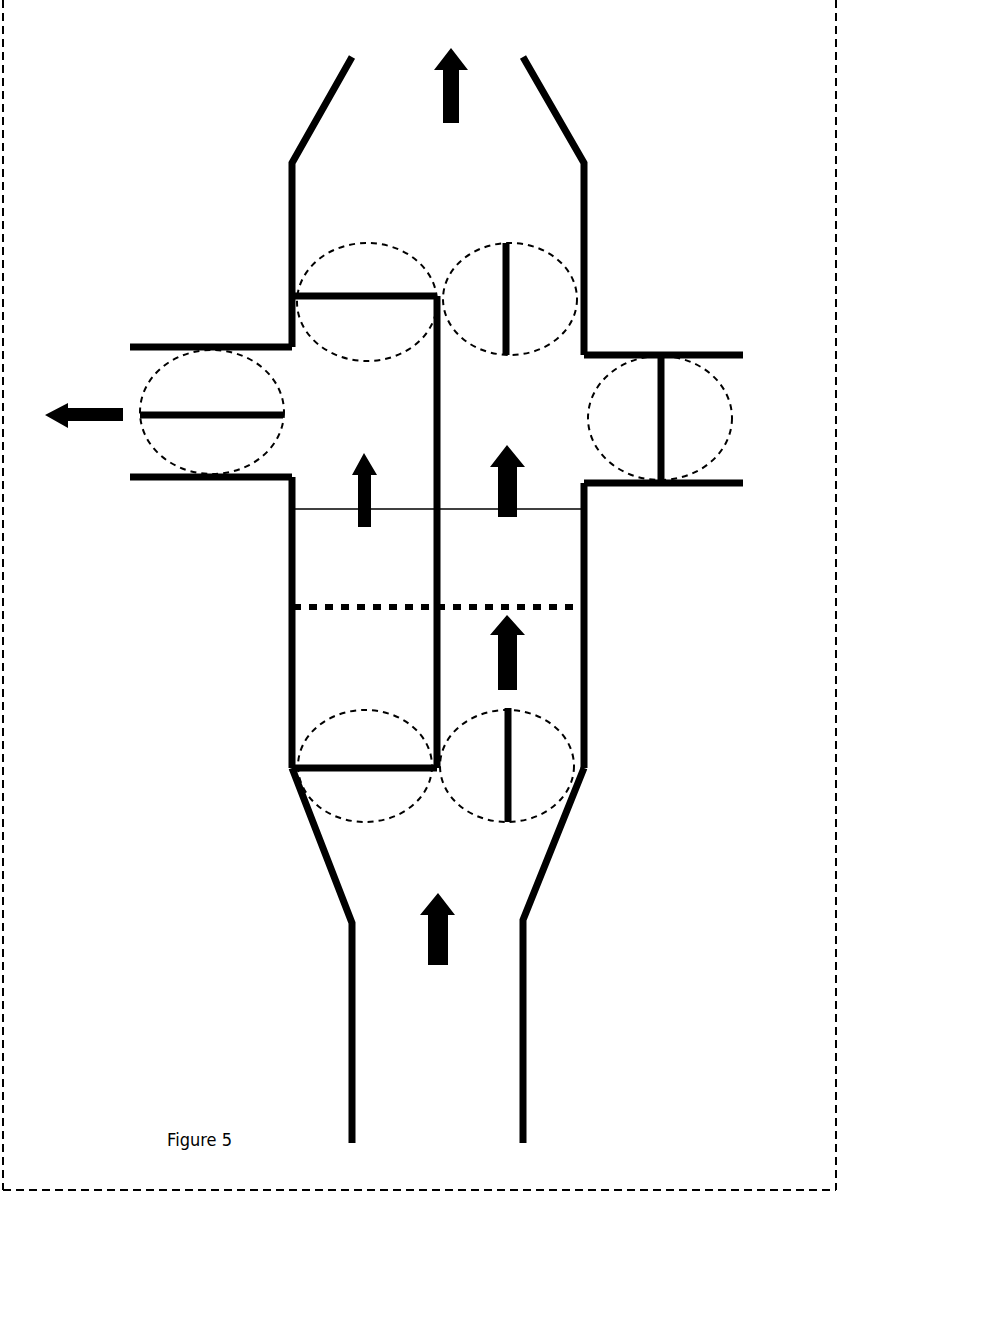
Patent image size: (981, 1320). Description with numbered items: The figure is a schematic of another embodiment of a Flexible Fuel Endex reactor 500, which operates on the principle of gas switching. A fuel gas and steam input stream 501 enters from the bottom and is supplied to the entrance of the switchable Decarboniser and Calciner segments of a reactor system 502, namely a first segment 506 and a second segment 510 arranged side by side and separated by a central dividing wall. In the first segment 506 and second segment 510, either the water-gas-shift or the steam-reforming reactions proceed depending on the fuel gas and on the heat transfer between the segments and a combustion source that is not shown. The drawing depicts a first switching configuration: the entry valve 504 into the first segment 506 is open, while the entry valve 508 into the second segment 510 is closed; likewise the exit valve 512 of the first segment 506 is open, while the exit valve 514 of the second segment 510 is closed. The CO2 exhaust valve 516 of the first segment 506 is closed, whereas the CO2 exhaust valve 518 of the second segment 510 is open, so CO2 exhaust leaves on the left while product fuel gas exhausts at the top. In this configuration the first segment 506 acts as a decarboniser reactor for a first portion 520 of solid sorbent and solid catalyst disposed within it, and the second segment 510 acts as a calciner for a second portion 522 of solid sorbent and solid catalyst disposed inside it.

The Flexible Fuel Endex reactor 500 is at (148, 148).
The fuel gas and steam input stream 501 is at (465, 930).
The reactor system 502 is at (732, 782).
The entry valve 504 is at (515, 799).
The first segment 506 is at (587, 572).
The entry valve 508 is at (320, 773).
The second segment 510 is at (288, 650).
The exit valve 512 is at (517, 257).
The exit valve 514 is at (320, 292).
The CO2 exhaust valve 516 is at (670, 378).
The CO2 exhaust valve 518 is at (212, 420).
The first portion of solid sorbent and solid catalyst 520 is at (557, 530).
The second portion of solid sorbent and solid catalyst 522 is at (322, 545).